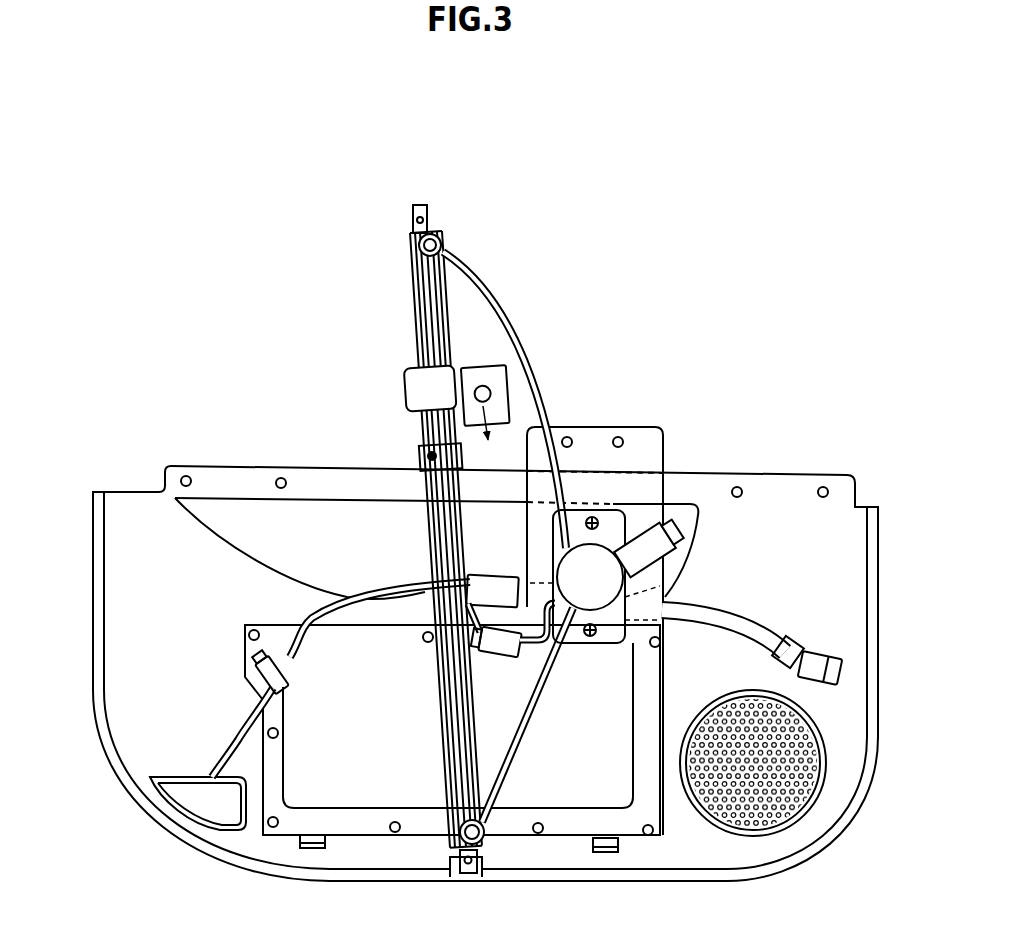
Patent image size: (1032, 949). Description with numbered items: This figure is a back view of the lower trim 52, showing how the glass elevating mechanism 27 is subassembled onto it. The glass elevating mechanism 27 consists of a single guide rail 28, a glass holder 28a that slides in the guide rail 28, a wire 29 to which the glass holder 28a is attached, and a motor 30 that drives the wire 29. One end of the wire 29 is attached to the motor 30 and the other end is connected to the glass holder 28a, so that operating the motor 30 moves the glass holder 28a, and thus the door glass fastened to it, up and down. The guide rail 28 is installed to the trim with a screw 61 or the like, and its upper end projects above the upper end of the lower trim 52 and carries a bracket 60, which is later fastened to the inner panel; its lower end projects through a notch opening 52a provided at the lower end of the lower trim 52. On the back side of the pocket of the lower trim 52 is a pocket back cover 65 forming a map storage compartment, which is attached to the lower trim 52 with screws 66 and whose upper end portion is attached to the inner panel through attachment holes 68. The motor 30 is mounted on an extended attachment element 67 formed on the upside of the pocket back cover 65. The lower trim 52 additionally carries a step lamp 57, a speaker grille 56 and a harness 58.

The glass elevating mechanism 27 is at (488, 697).
The guide rail 28 is at (427, 539).
The glass holder 28a is at (478, 372).
The wire 29 is at (546, 382).
The motor 30 is at (600, 606).
The lower trim 52 is at (860, 572).
The notch opening 52a is at (458, 877).
The speaker grille 56 is at (765, 815).
The step lamp 57 is at (205, 830).
The harness 58 is at (242, 732).
The bracket 60 is at (428, 208).
The screw 61 is at (430, 454).
The pocket back cover 65 is at (443, 765).
The screws 66 is at (248, 633).
The extended attachment element 67 is at (626, 610).
The attachment holes 68 is at (569, 438).